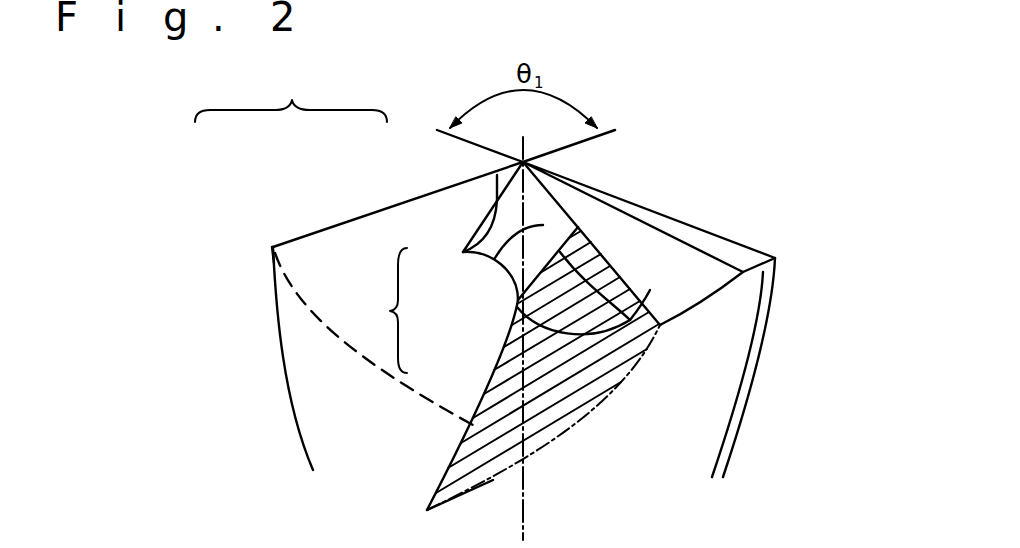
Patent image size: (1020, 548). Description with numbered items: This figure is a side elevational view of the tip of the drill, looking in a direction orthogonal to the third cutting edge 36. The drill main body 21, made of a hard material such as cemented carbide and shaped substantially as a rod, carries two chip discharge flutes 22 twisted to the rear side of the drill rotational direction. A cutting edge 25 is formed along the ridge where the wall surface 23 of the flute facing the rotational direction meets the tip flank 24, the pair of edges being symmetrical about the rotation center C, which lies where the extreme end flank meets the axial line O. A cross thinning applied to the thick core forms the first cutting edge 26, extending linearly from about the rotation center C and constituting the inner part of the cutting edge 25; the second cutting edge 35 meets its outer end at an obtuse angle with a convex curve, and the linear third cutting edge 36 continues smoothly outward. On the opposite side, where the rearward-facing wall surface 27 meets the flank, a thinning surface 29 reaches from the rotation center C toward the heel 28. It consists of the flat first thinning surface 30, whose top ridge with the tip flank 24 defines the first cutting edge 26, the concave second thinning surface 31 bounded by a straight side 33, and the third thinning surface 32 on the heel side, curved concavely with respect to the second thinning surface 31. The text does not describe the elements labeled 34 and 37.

The drill main body 21 is at (752, 402).
The chip discharge flute 22 is at (338, 385).
The wall surface 23 is at (330, 290).
The tip flank 24 is at (683, 257).
The cutting edge 25 is at (697, 145).
The first cutting edge 26 is at (523, 162).
The wall surface 27 is at (480, 383).
The heel 28 is at (458, 460).
The thinning surface 29 is at (382, 310).
The first thinning surface 30 is at (463, 252).
The second thinning surface 31 is at (527, 272).
The third thinning surface 32 is at (504, 280).
The side 33 is at (563, 203).
The flute edge 34 is at (636, 290).
The second cutting edge 35 is at (463, 250).
The third cutting edge 36 is at (313, 230).
The margin 37 is at (273, 282).
The rotation center C is at (531, 153).
The axial line O is at (523, 505).